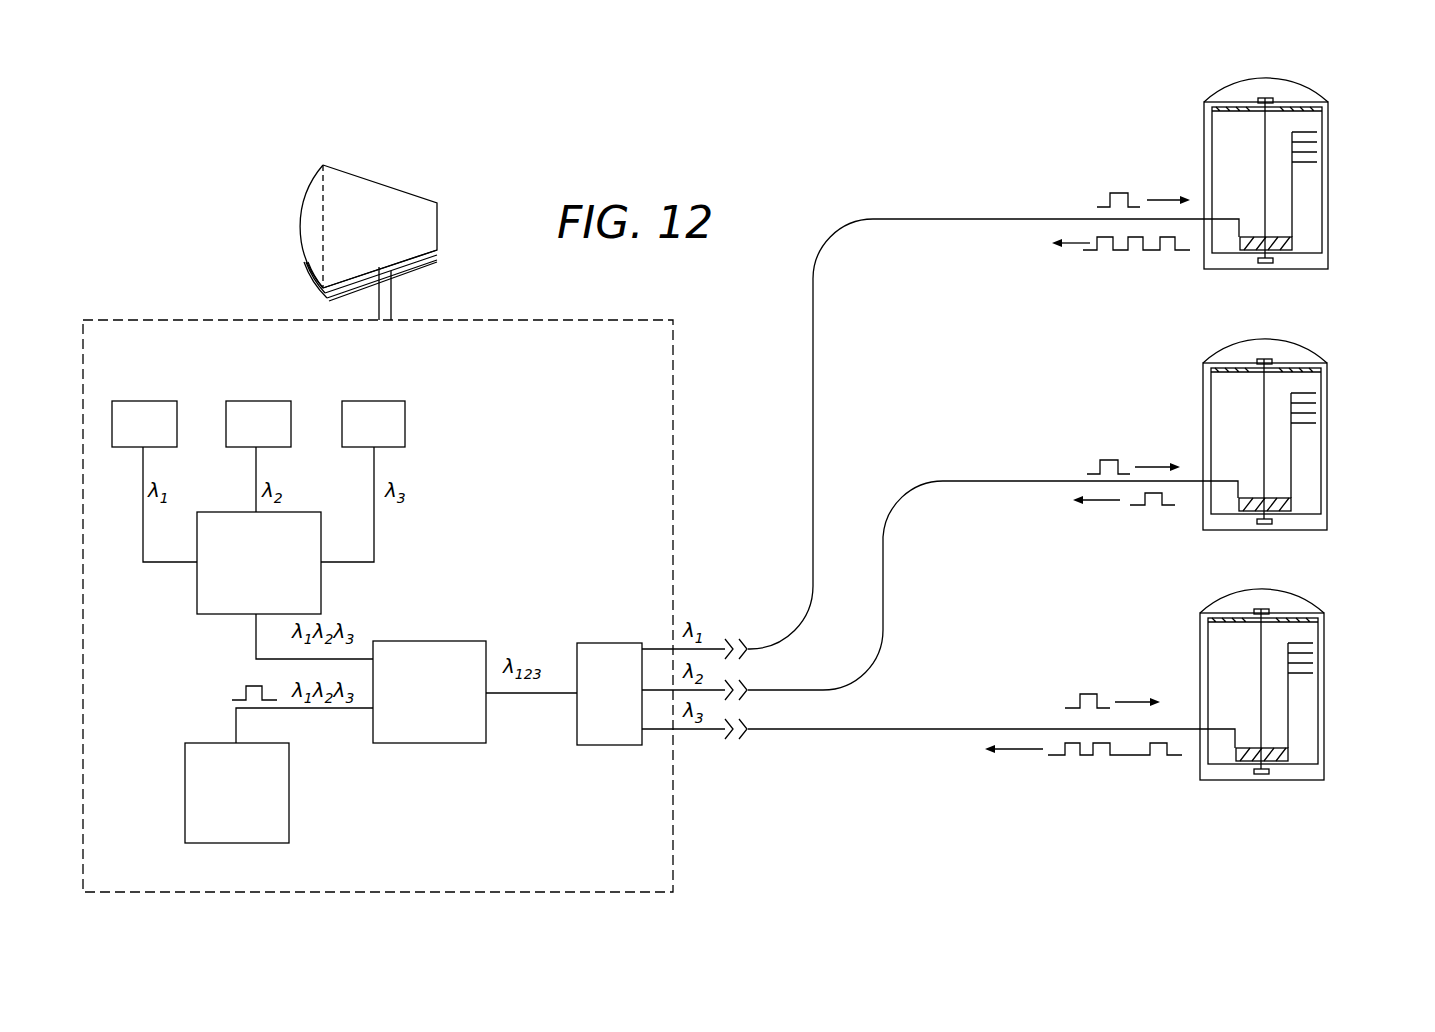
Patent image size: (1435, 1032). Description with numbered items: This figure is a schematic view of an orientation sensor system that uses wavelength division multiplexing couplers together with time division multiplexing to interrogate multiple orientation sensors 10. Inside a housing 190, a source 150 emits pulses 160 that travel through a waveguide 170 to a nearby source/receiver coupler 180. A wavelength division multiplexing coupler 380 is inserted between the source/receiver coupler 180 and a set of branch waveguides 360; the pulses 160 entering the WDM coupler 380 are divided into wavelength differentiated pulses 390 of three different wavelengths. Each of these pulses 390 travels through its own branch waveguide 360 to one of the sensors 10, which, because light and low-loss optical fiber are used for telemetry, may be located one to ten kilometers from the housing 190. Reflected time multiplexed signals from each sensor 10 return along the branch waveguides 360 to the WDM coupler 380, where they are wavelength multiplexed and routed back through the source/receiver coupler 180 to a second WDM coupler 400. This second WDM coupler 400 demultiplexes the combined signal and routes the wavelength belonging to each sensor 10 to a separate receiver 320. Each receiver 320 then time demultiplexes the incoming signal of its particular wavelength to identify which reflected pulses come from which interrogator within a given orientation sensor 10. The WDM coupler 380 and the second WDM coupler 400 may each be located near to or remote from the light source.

The orientation sensor 10 is at (1328, 183).
The source 150 is at (289, 785).
The pulses 160 is at (226, 688).
The waveguide 170 is at (246, 726).
The source/receiver coupler 180 is at (440, 743).
The housing 190 is at (673, 822).
The receiver 320 is at (147, 401).
The branch waveguide 360 is at (813, 414).
The wavelength division multiplexing coupler 380 is at (600, 745).
The wavelength differentiated pulses 390 is at (1112, 180).
The second WDM coupler 400 is at (197, 586).